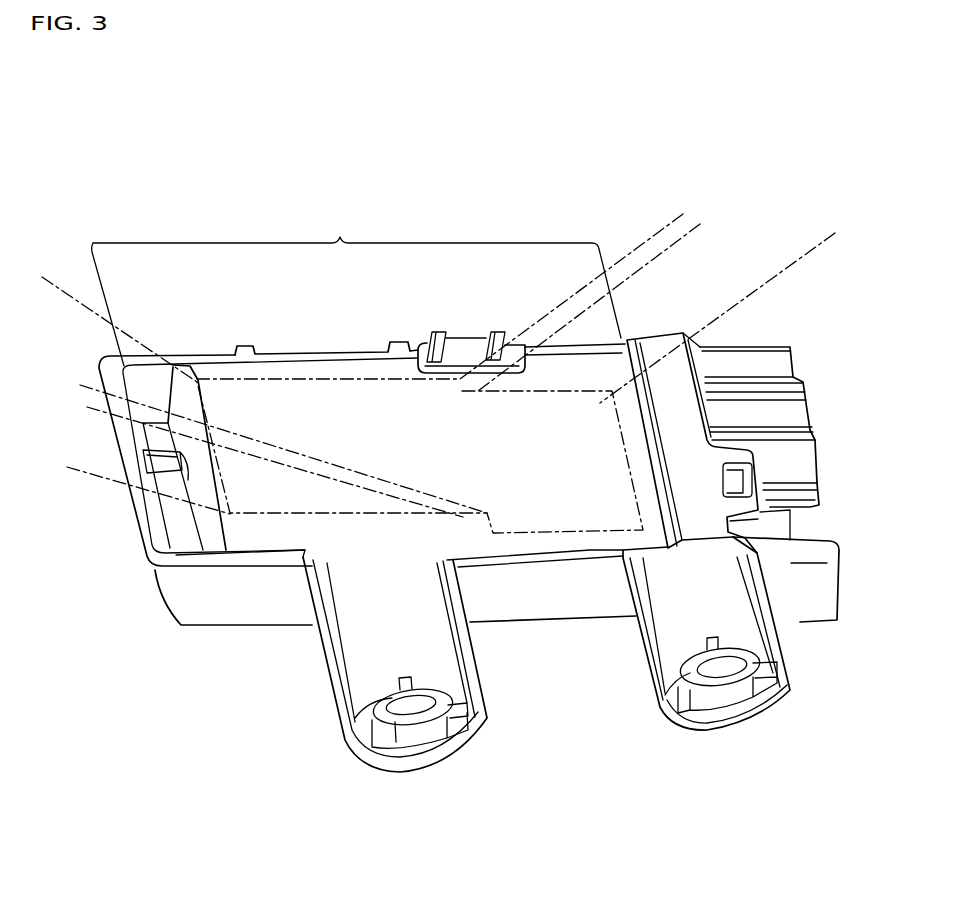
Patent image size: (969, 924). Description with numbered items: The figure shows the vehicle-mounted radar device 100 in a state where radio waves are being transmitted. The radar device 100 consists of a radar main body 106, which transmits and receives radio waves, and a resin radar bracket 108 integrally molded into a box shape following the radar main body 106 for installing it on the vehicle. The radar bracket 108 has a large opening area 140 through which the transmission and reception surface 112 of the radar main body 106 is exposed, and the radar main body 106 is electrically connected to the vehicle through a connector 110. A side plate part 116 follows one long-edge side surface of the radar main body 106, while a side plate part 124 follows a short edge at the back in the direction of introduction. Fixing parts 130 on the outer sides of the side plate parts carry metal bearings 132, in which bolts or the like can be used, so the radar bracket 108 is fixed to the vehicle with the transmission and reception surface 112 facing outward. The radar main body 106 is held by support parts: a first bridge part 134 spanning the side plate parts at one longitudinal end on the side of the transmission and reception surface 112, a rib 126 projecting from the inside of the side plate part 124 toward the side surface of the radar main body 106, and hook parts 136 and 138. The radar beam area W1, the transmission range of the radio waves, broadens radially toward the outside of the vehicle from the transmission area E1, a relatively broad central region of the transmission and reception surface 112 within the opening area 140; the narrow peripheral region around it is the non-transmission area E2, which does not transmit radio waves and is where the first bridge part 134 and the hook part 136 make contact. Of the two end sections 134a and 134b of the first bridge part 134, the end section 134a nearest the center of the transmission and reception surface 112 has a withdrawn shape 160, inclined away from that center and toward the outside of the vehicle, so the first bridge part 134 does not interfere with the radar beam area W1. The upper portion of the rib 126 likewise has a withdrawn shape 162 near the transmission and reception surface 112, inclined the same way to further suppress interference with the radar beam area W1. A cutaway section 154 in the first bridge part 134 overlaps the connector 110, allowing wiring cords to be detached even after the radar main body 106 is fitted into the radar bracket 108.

The radar device 100 is at (148, 242).
The opening area 140 is at (356, 288).
The radar bracket 108 is at (107, 358).
The radar main body 106 is at (168, 398).
The transmission and reception surface 112 is at (283, 373).
The transmission area E1 is at (333, 390).
The hook part 138 is at (470, 347).
The first bridge part 134 is at (657, 337).
The end section 134a is at (627, 368).
The end section 134b is at (703, 367).
The radar beam area W1 is at (783, 267).
The cutaway section 154 is at (710, 410).
The connector 110 is at (810, 417).
The withdrawn shape 160 is at (647, 460).
The withdrawn shape 162 is at (190, 470).
The rib 126 is at (177, 507).
The side plate part 124 is at (167, 597).
The non-transmission area E2 is at (259, 548).
The hook part 136 is at (360, 540).
The side plate part 116 is at (550, 607).
The metal bearing 132 is at (723, 650).
The fixing part 130 is at (753, 723).